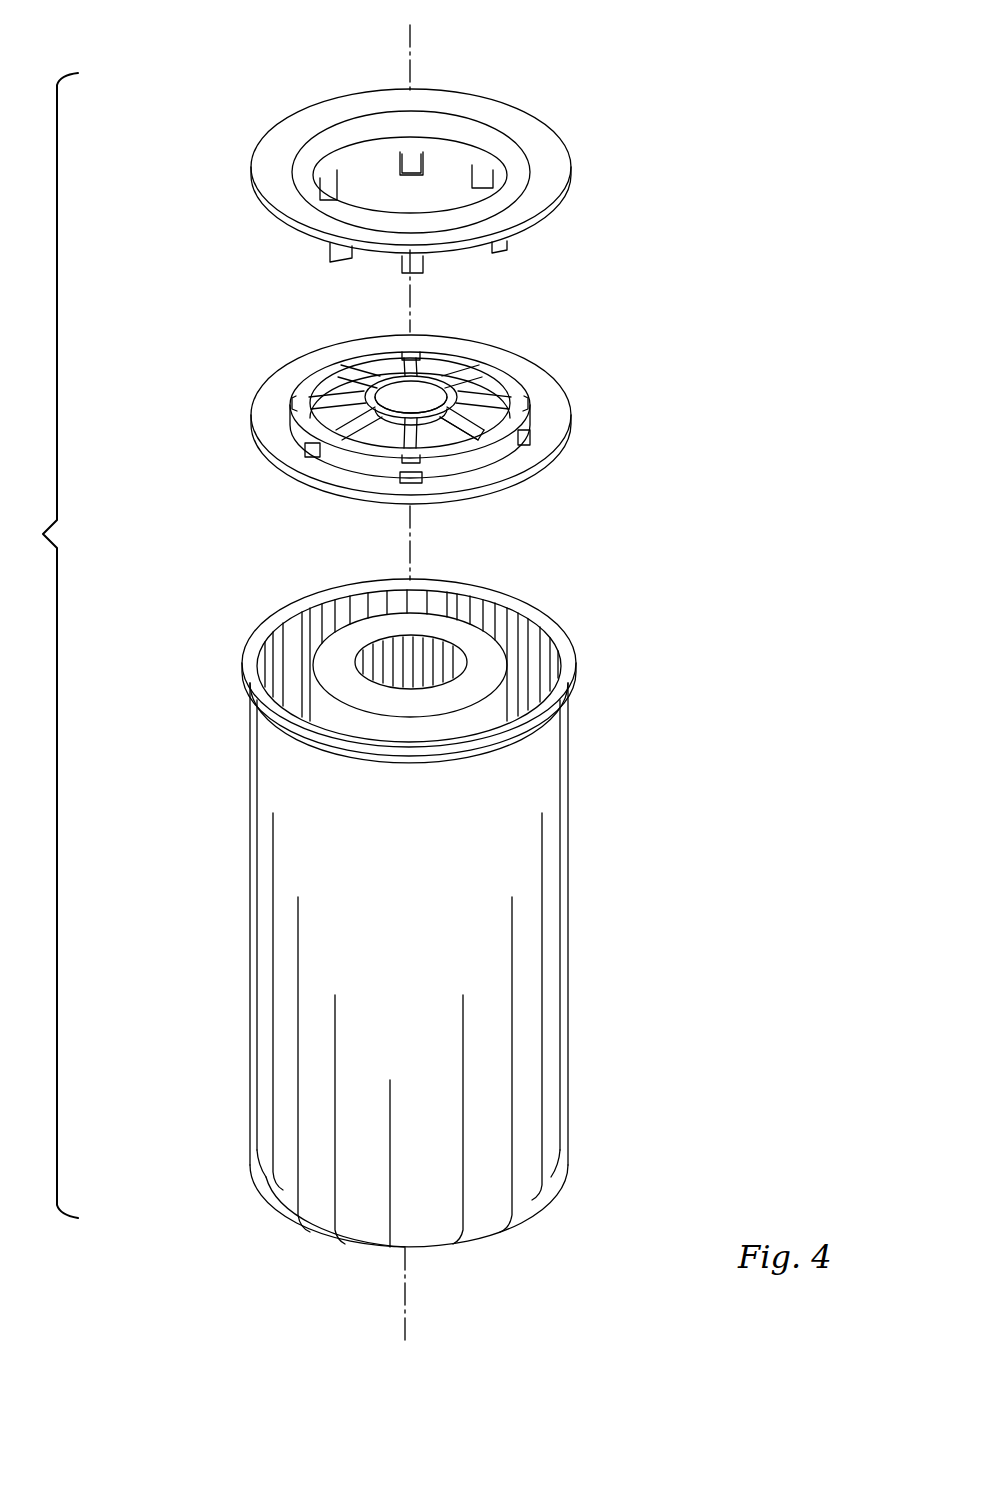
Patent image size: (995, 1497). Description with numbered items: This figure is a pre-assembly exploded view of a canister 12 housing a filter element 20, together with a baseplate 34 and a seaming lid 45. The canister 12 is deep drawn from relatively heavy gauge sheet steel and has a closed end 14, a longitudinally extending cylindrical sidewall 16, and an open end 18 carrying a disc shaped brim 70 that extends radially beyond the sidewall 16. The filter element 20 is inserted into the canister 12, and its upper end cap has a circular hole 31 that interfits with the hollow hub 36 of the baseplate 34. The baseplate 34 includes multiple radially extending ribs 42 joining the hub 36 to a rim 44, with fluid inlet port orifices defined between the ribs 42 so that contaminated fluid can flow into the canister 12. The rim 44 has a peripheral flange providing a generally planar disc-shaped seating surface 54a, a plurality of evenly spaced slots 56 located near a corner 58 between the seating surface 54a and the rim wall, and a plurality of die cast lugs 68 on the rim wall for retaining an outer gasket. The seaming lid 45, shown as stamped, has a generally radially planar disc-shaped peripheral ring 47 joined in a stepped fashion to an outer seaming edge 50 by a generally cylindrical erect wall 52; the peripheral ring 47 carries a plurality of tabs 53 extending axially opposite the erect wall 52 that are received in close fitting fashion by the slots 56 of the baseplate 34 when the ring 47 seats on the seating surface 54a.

The canister 12 is at (616, 865).
The closed end 14 is at (281, 1200).
The cylindrical sidewall 16 is at (248, 905).
The open end 18 is at (519, 587).
The filter element 20 is at (497, 705).
The circular hole 31 is at (392, 675).
The baseplate 34 is at (257, 371).
The hub 36 is at (405, 385).
The radially extending ribs 42 is at (500, 387).
The rim 44 is at (462, 445).
The seaming lid 45 is at (288, 241).
The peripheral ring 47 is at (421, 130).
The outer seaming edge 50 is at (552, 145).
The erect wall 52 is at (388, 128).
The tabs 53 is at (423, 267).
The seating surface 54a is at (409, 645).
The slots 56 is at (532, 432).
The corner 58 is at (368, 476).
The lugs 68 is at (176, 450).
The brim 70 is at (568, 663).